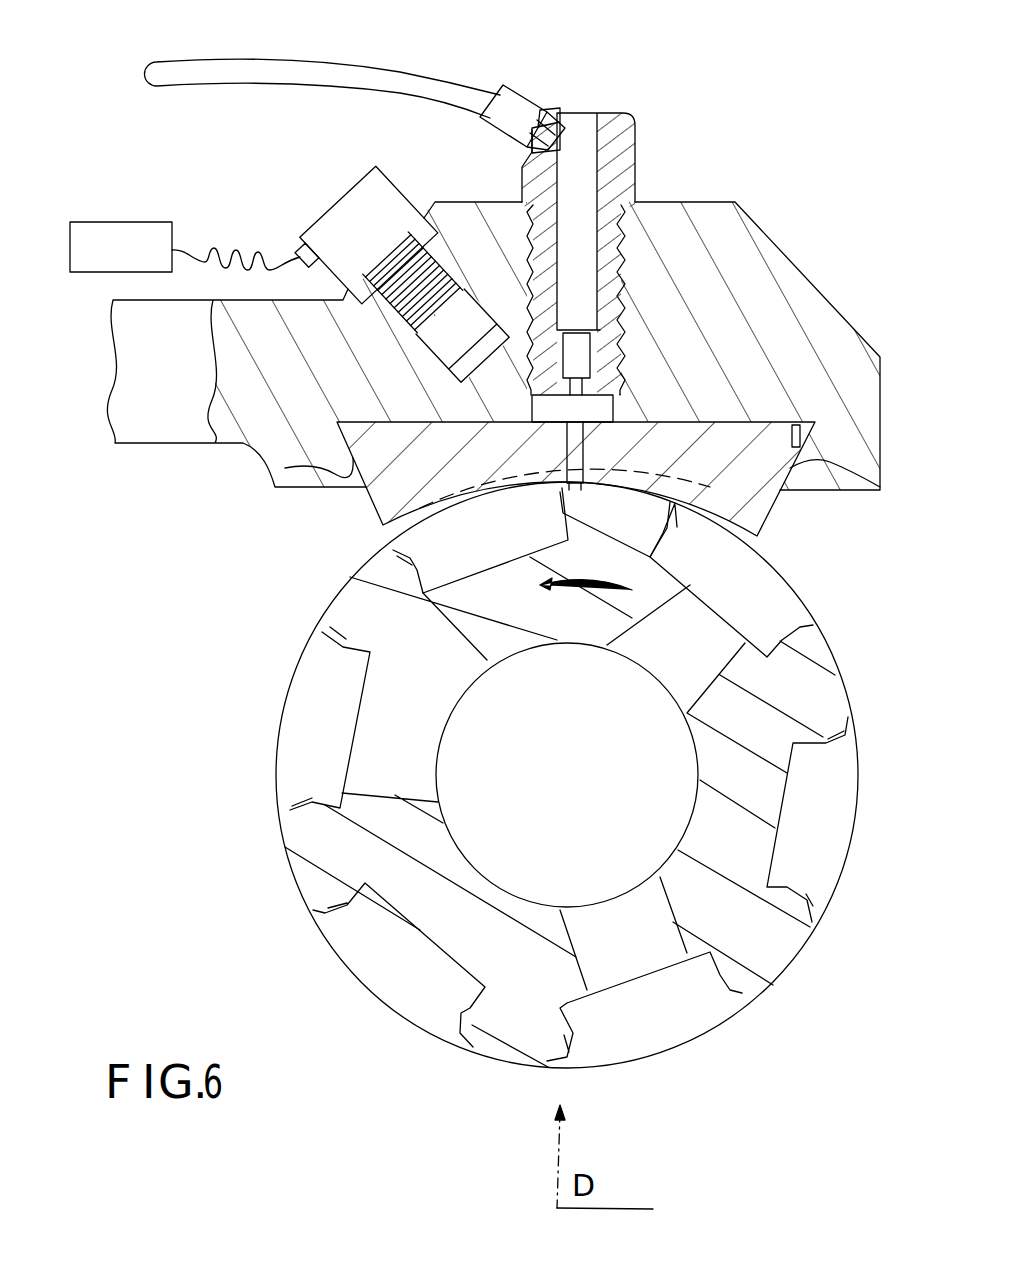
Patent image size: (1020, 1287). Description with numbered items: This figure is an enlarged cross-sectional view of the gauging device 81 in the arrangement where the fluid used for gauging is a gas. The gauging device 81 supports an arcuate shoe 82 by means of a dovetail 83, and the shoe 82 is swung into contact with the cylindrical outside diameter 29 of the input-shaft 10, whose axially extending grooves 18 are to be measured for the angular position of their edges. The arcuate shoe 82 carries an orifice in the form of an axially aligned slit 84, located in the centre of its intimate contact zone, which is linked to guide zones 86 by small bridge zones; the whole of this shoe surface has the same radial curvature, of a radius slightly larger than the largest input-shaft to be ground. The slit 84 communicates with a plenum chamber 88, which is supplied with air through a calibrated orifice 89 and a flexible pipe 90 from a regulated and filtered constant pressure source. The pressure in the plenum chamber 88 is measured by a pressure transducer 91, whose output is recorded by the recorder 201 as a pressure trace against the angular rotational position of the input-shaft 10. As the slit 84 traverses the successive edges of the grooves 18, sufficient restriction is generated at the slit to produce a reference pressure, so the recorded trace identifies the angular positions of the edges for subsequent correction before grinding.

The input-shaft 10 is at (521, 775).
The axially extending grooves 18 is at (307, 690).
The outside diameter 29 is at (277, 772).
The gauging device 81 is at (163, 430).
The arcuate shoe 82 is at (763, 503).
The dovetail 83 is at (285, 468).
The axially aligned slit 84 is at (570, 446).
The guide zones 86 is at (792, 422).
The plenum chamber 88 is at (620, 413).
The calibrated orifice 89 is at (620, 360).
The flexible pipe 90 is at (435, 85).
The pressure transducer 91 is at (337, 223).
The recorder 201 is at (185, 247).